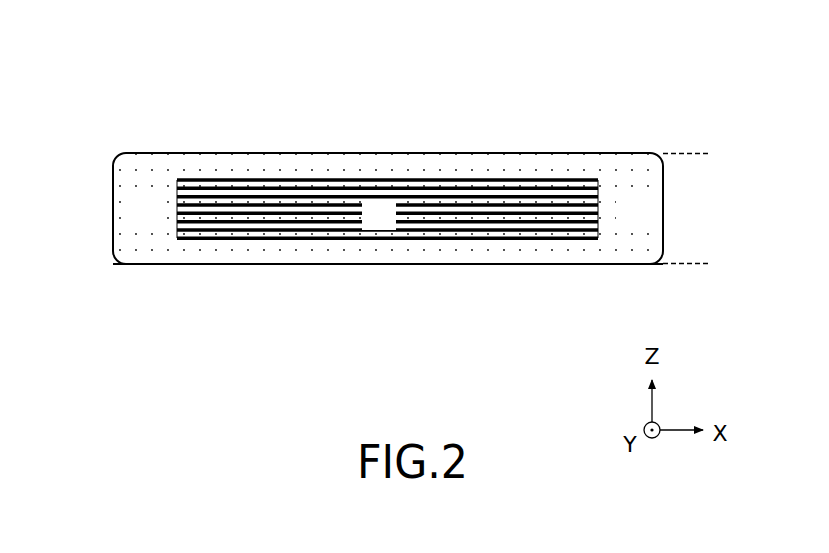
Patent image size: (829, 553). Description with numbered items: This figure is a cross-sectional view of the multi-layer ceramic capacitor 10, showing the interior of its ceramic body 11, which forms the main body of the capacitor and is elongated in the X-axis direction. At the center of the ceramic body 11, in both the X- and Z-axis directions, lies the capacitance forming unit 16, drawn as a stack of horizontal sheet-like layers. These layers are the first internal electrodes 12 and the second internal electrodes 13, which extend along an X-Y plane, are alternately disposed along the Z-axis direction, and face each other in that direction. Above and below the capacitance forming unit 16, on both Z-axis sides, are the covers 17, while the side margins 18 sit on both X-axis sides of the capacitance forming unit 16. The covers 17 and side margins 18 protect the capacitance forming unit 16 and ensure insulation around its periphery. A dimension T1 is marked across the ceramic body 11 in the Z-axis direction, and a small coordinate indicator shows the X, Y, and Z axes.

The multi-layer ceramic capacitor 10 is at (628, 84).
The ceramic body 11 is at (323, 283).
The first internal electrodes 12 is at (338, 222).
The second internal electrodes 13 is at (402, 233).
The capacitance forming unit 16 is at (379, 215).
The covers 17 is at (240, 165).
The side margins 18 is at (129, 218).
The thickness of the cell T1 is at (687, 154).